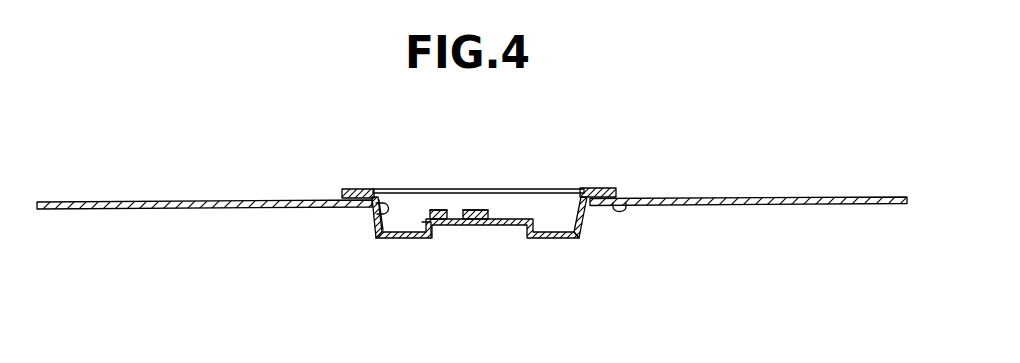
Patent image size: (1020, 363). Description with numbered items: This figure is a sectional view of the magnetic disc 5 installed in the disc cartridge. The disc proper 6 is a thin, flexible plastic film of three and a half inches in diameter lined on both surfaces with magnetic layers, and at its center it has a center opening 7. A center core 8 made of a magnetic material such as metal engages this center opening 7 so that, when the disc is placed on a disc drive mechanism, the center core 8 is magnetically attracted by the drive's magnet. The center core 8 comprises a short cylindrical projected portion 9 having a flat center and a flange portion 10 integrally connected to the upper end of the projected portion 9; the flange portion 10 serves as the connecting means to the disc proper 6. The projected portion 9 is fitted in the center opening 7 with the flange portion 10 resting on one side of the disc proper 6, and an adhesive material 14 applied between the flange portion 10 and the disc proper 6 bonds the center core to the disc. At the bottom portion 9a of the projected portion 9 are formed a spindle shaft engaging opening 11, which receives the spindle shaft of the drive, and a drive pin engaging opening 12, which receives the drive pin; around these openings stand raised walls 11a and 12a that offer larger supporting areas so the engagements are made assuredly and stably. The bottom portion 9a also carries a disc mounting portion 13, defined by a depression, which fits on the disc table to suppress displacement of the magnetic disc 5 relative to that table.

The magnetic disc 5 is at (762, 178).
The disc proper 6 is at (745, 207).
The center opening 7 is at (370, 213).
The center core 8 is at (373, 225).
The projected portion 9 is at (507, 253).
The bottom portion 9a is at (555, 238).
The flange portion 10 is at (466, 180).
The spindle shaft engaging opening 11 is at (500, 207).
The raised wall 11a is at (490, 210).
The drive pin engaging opening 12 is at (434, 207).
The raised wall 12a is at (429, 210).
The disc mounting portion 13 is at (433, 237).
The adhesive material 14 is at (632, 207).